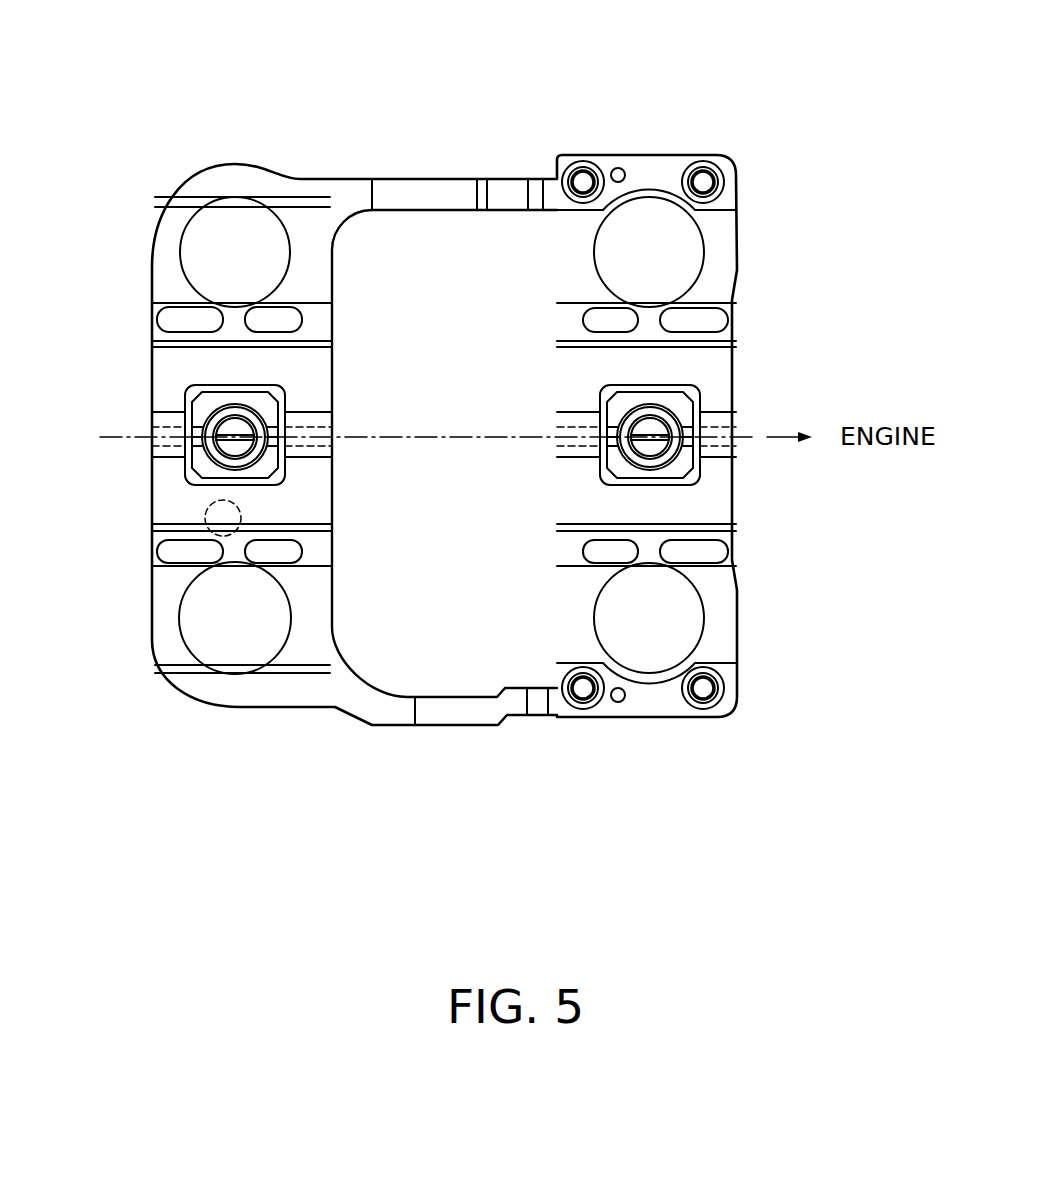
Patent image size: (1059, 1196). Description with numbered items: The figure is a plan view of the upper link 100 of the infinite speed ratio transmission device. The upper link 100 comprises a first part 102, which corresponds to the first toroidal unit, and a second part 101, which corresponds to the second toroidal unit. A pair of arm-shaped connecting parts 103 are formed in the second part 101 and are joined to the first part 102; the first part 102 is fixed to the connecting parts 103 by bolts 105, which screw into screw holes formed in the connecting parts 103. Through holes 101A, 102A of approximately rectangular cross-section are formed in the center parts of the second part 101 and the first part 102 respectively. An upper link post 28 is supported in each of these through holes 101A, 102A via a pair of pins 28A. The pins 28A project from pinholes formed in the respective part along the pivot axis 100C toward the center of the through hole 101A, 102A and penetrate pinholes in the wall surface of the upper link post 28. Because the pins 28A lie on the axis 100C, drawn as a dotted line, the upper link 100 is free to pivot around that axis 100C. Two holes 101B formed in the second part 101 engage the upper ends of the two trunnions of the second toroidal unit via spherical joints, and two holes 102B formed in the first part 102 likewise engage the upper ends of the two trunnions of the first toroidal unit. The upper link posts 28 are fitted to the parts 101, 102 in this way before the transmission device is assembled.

The upper link 100 is at (306, 160).
The pivot axis 100C is at (468, 437).
The second part 101 is at (168, 368).
The through hole 101A is at (187, 428).
The holes 101B is at (190, 230).
The first part 102 is at (705, 365).
The through hole 102A is at (710, 398).
The holes 102B is at (702, 256).
The connecting parts 103 is at (437, 190).
The bolts 105 is at (584, 175).
The upper link post 28 is at (268, 408).
The pins 28A is at (273, 423).